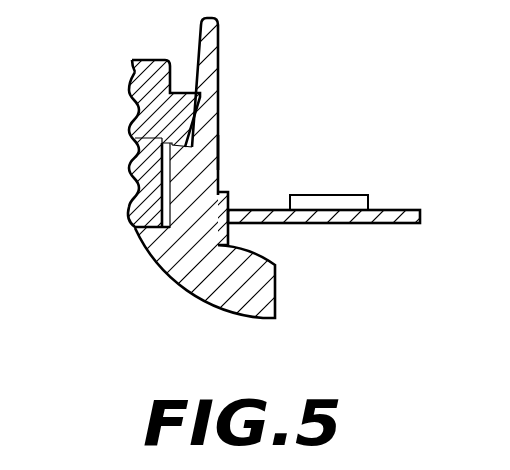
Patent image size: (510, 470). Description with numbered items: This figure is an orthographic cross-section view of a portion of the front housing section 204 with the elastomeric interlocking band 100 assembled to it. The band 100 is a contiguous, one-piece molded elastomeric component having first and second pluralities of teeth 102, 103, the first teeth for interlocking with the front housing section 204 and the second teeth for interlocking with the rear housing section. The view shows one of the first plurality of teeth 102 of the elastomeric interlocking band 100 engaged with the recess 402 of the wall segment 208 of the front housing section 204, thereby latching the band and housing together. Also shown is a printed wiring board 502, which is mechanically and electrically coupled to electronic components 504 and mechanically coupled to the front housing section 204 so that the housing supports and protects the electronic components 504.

The elastomeric interlocking band 100 is at (137, 86).
The first plurality of teeth 102 is at (215, 120).
The second plurality of teeth 103 is at (255, 235).
The front housing section 204 is at (253, 260).
The wall segment 208 is at (217, 150).
The recess 402 is at (138, 142).
The printed wiring board 502 is at (405, 209).
The electronic components 504 is at (317, 194).